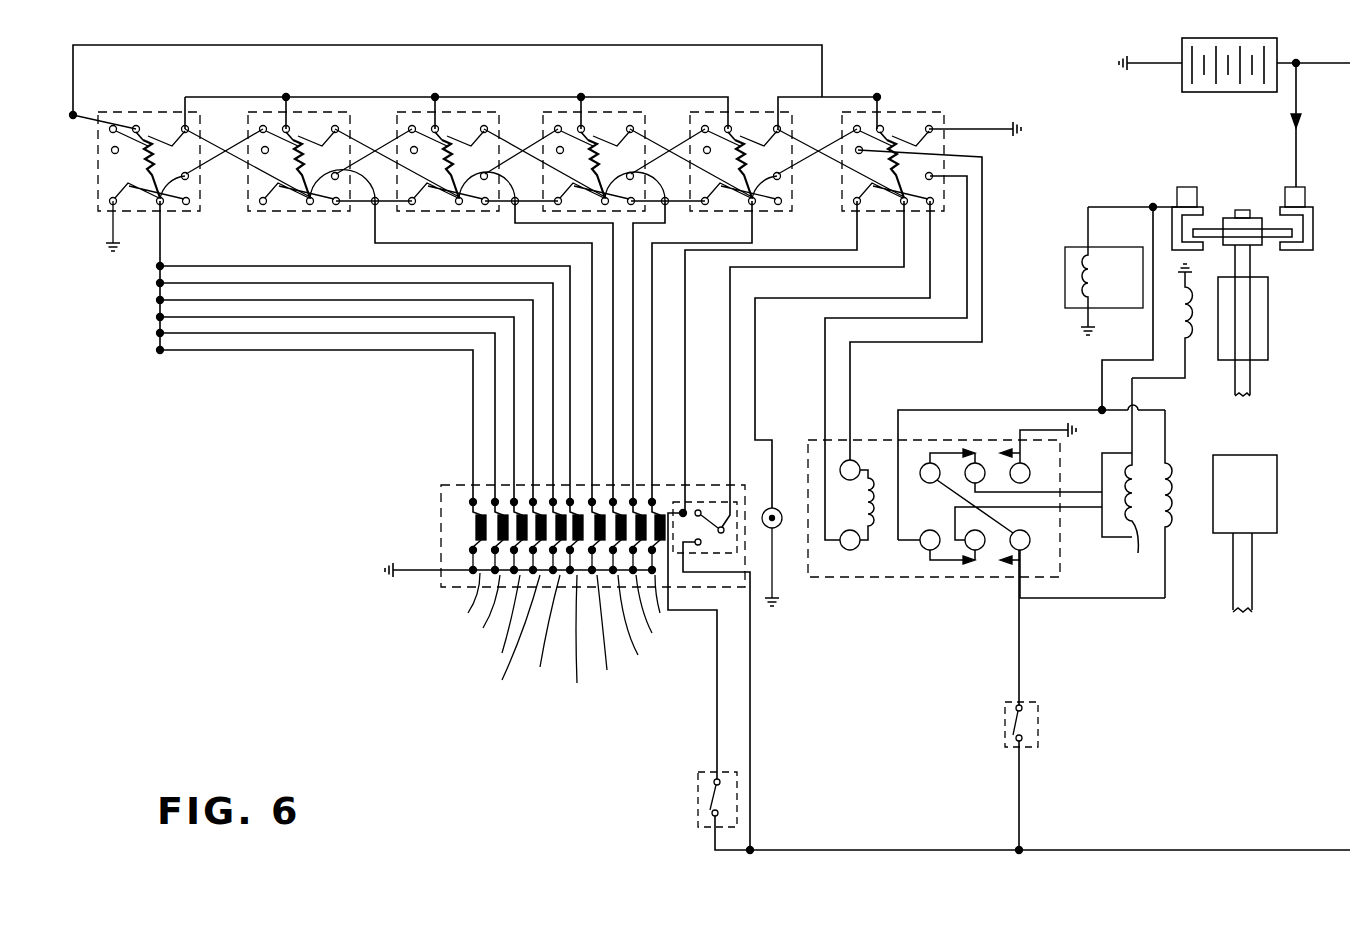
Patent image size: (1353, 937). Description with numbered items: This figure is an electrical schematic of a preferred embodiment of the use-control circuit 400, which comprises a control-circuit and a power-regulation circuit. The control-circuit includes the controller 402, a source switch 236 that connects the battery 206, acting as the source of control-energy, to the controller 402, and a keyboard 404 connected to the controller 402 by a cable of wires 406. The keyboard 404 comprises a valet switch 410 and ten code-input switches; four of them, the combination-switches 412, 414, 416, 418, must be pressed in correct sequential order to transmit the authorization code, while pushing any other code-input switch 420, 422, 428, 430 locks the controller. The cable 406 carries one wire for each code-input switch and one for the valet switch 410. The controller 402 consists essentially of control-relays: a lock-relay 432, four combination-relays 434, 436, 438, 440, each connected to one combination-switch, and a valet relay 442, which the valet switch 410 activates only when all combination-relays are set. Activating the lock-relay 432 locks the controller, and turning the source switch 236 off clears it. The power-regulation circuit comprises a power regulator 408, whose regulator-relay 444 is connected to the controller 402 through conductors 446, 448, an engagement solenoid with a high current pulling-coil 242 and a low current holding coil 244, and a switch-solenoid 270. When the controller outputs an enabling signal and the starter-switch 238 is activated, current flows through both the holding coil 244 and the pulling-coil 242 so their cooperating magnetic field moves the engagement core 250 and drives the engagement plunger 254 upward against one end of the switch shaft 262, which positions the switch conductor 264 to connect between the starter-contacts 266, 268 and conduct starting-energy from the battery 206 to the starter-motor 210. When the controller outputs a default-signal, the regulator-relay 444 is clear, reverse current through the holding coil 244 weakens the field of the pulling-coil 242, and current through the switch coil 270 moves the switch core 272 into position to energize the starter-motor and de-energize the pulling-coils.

The battery 206 is at (1280, 50).
The starter-motor 210 is at (1072, 247).
The source switch 236 is at (698, 800).
The starter-switch 238 is at (1040, 730).
The pulling-coil 242 is at (1173, 463).
The holding coil 244 is at (1126, 479).
The engagement core 250 is at (1278, 478).
The engagement plunger 254 is at (1252, 572).
The switch shaft 262 is at (1252, 266).
The switch conductor 264 is at (1266, 215).
The starter-contact 266 is at (1312, 200).
The starter-contact 268 is at (1195, 187).
The switch-solenoid 270 is at (1180, 333).
The switch core 272 is at (1270, 322).
The use-control circuit 400 is at (258, 657).
The controller 402 is at (1018, 156).
The keyboard 404 is at (438, 492).
The cable of wires 406 is at (455, 415).
The power regulator 408 is at (857, 597).
The valet switch 410 is at (706, 485).
The combination-switch 412 is at (676, 605).
The combination-switch 414 is at (664, 616).
The combination-switch 416 is at (647, 627).
The combination-switch 418 is at (621, 636).
The code-input switch 420 is at (454, 604).
The code-input switch 422 is at (478, 616).
The code-input switch 428 is at (530, 639).
The code-input switch 430 is at (573, 644).
The lock-relay 432 is at (140, 108).
The combination-relay 434 is at (340, 108).
The combination-relay 436 is at (472, 108).
The combination-relay 438 is at (615, 108).
The combination-relay 440 is at (740, 108).
The valet relay 442 is at (905, 108).
The regulator-relay 444 is at (808, 448).
The conductor 446 is at (850, 392).
The conductor 448 is at (825, 377).